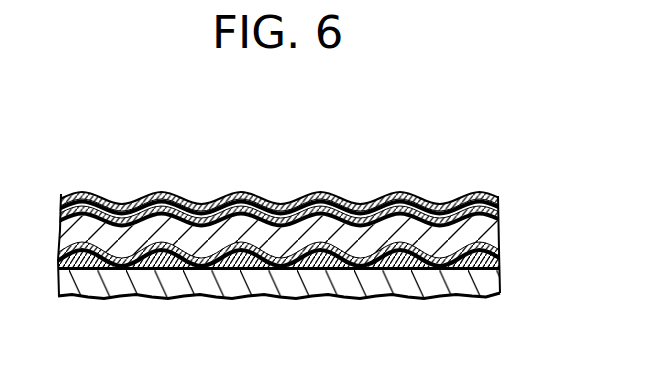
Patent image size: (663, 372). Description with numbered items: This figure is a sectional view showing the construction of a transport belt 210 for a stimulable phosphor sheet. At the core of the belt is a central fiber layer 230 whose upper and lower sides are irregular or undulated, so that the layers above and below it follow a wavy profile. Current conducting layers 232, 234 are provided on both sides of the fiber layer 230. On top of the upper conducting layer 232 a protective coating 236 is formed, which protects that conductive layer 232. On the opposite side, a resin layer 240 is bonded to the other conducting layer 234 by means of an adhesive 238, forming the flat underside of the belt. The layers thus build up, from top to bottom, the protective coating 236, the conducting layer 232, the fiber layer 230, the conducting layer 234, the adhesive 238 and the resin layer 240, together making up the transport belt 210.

The transport belt 210 is at (437, 146).
The protective coating 236 is at (479, 193).
The current conducting layer 232 is at (500, 203).
The central fiber layer 230 is at (488, 228).
The current conducting layer 234 is at (495, 255).
The adhesive 238 is at (497, 266).
The resin layer 240 is at (468, 279).